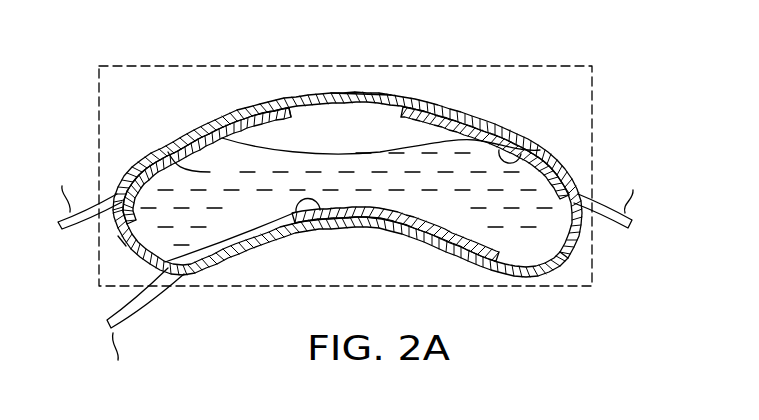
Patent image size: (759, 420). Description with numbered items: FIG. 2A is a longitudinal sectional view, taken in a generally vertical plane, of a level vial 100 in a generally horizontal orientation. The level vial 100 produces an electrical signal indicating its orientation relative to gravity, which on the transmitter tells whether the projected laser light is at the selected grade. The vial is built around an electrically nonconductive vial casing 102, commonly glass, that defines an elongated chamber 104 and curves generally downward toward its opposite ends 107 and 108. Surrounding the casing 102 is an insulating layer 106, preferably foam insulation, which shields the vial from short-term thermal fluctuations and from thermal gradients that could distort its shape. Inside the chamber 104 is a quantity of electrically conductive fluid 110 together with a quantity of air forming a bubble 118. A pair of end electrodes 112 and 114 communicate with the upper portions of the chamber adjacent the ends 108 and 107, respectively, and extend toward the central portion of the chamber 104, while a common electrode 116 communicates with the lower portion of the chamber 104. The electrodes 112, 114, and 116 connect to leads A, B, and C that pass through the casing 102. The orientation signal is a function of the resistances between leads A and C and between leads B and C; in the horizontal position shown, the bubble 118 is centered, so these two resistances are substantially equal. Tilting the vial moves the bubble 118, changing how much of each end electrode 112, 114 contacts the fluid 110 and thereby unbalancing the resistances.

The level vial 100 is at (600, 83).
The vial casing 102 is at (540, 150).
The elongated chamber 104 is at (477, 205).
The insulating layer 106 is at (456, 60).
The end of casing 107 is at (565, 247).
The end of casing 108 is at (120, 243).
The electrically conductive fluid 110 is at (168, 145).
The end electrode 112 is at (276, 125).
The end electrode 114 is at (523, 155).
The common electrode 116 is at (300, 212).
The air bubble 118 is at (353, 110).